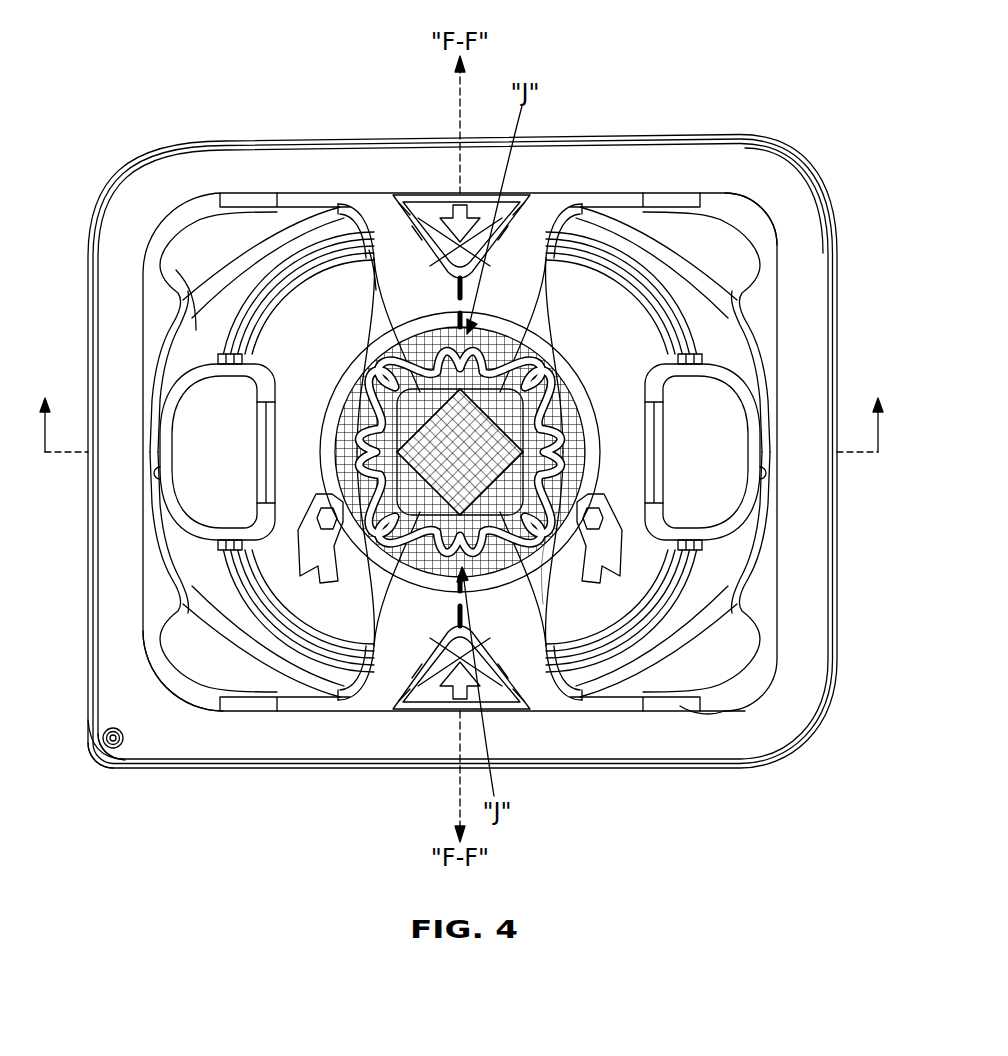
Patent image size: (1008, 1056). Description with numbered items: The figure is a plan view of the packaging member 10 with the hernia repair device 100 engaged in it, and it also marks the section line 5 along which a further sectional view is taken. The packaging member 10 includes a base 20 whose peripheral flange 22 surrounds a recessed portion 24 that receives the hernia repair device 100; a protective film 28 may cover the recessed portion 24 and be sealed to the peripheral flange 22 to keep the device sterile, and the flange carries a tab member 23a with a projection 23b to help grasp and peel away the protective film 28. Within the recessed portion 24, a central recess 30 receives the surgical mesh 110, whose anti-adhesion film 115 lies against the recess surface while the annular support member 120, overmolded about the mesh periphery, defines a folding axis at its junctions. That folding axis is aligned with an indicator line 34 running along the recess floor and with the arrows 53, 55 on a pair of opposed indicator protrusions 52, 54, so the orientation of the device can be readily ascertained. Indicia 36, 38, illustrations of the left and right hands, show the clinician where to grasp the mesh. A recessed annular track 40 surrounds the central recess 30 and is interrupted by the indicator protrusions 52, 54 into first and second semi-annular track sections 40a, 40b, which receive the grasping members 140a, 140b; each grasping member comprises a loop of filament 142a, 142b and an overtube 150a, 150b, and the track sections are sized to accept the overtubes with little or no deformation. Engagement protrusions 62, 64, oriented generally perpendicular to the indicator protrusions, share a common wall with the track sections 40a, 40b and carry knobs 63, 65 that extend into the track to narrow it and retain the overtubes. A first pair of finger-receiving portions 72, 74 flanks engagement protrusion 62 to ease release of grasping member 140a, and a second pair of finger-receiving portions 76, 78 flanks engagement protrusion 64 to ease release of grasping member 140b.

The packaging member 10 is at (672, 74).
The base 20 is at (808, 187).
The peripheral flange 22 is at (800, 232).
The recessed portion 24 is at (735, 262).
The protective film 28 is at (140, 770).
The tab member 23a is at (116, 766).
The projection 23b is at (103, 735).
The central recess 30 is at (604, 533).
The indicator line 34 is at (383, 262).
The indicium 36 is at (732, 552).
The indicium 38 is at (305, 568).
The recessed annular track 40 is at (625, 690).
The first semi-annular recessed track section 40a is at (650, 655).
The second semi-annular recessed track section 40b is at (290, 660).
The indicator protrusion 52 is at (440, 200).
The arrow 53 is at (470, 228).
The indicator protrusion 54 is at (410, 690).
The arrow 55 is at (455, 697).
The engagement protrusion 62 is at (725, 435).
The knob 63 is at (762, 477).
The engagement protrusion 64 is at (200, 430).
The knob 65 is at (158, 477).
The finger-receiving portion 72 is at (770, 182).
The finger-receiving portion 74 is at (735, 660).
The finger-receiving portion 76 is at (186, 252).
The finger-receiving portion 78 is at (172, 655).
The hernia repair device 100 is at (353, 568).
The surgical mesh 110 is at (326, 330).
The film 115 is at (510, 592).
The support member 120 is at (612, 323).
The grasping member 140a is at (602, 208).
The grasping member 140b is at (256, 250).
The loop of filament 142a is at (578, 200).
The loop of filament 142b is at (343, 200).
The overtube 150a is at (725, 232).
The overtube 150b is at (198, 238).
The section line 5 is at (462, 410).